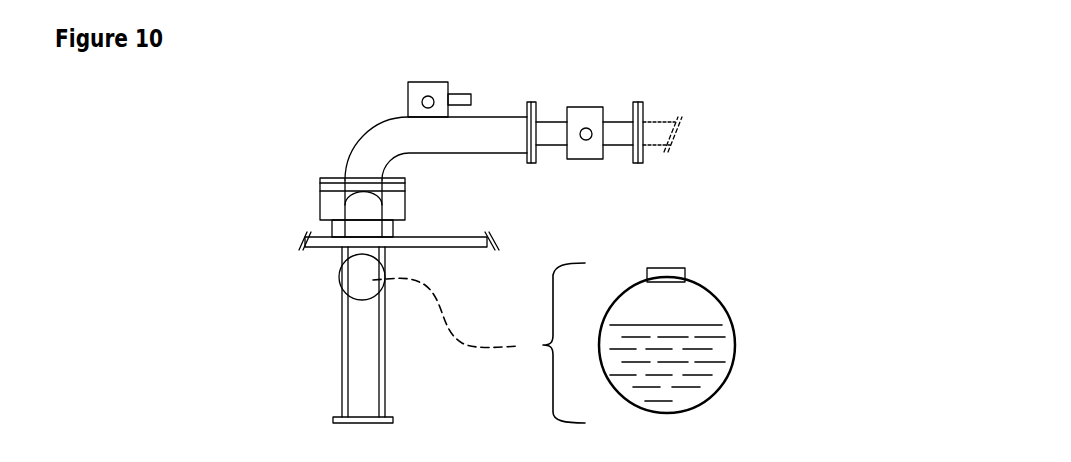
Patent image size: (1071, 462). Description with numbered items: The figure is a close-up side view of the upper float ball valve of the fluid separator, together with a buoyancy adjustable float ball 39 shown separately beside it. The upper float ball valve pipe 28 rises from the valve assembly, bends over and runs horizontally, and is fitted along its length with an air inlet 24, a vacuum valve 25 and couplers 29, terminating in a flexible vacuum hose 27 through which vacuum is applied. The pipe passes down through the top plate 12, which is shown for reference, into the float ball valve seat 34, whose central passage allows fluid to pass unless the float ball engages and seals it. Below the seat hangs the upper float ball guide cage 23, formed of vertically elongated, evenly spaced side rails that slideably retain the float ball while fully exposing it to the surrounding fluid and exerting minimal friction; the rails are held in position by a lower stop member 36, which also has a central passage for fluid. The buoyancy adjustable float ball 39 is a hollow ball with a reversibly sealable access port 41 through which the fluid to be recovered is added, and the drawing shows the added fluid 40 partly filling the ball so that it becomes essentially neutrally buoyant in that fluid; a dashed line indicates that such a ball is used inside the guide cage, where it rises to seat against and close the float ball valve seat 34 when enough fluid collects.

The top plate 12 is at (453, 228).
The upper float ball guide cage 23 is at (322, 350).
The air inlet 24 is at (422, 76).
The vacuum valve 25 is at (587, 97).
The flexible vacuum hose 27 is at (670, 107).
The upper float ball valve pipe 28 is at (358, 123).
The couplers 29 is at (647, 172).
The float ball valve seat 34 is at (308, 200).
The lower stop member 36 is at (313, 418).
The buoyancy adjustable float ball 39 is at (758, 355).
The liquid 40 is at (673, 387).
The reversibly sealable access port 41 is at (672, 262).